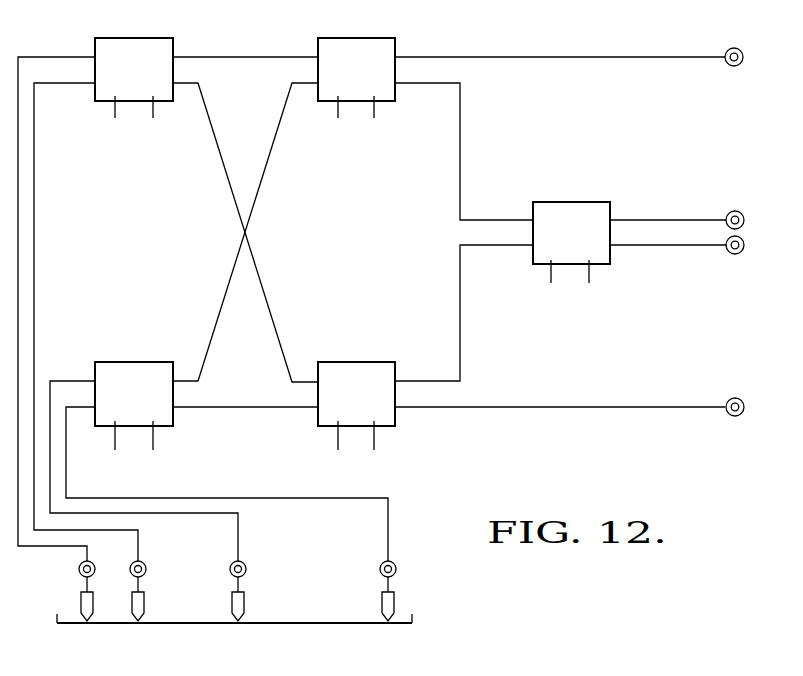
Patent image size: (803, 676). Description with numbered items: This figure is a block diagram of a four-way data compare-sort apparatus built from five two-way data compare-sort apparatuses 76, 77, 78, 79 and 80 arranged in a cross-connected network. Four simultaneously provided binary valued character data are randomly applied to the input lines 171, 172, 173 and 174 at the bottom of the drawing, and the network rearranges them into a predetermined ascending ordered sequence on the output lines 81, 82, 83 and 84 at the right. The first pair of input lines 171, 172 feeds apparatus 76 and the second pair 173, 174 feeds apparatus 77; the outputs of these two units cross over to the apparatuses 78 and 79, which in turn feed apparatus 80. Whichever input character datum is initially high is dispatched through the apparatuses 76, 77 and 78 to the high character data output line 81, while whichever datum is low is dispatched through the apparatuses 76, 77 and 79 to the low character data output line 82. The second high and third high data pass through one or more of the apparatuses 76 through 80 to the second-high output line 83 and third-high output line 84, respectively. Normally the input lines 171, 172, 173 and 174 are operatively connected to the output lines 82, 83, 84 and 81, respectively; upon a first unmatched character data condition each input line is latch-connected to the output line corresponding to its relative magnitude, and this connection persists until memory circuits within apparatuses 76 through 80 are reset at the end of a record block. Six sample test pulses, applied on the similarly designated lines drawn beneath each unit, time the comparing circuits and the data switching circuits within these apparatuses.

The two-way data compare-sort apparatus 76 is at (140, 38).
The two-way data compare-sort apparatus 77 is at (141, 362).
The two-way data compare-sort apparatus 78 is at (366, 38).
The two-way data compare-sort apparatus 79 is at (366, 362).
The two-way data compare-sort apparatus 80 is at (581, 202).
The high character data output line 81 is at (598, 57).
The low character data output line 82 is at (614, 407).
The 2nd HI output line 83 is at (667, 220).
The 3rd HI output line 84 is at (673, 245).
The input line 171 is at (87, 588).
The input line 172 is at (138, 588).
The input line 173 is at (238, 588).
The input line 174 is at (388, 588).